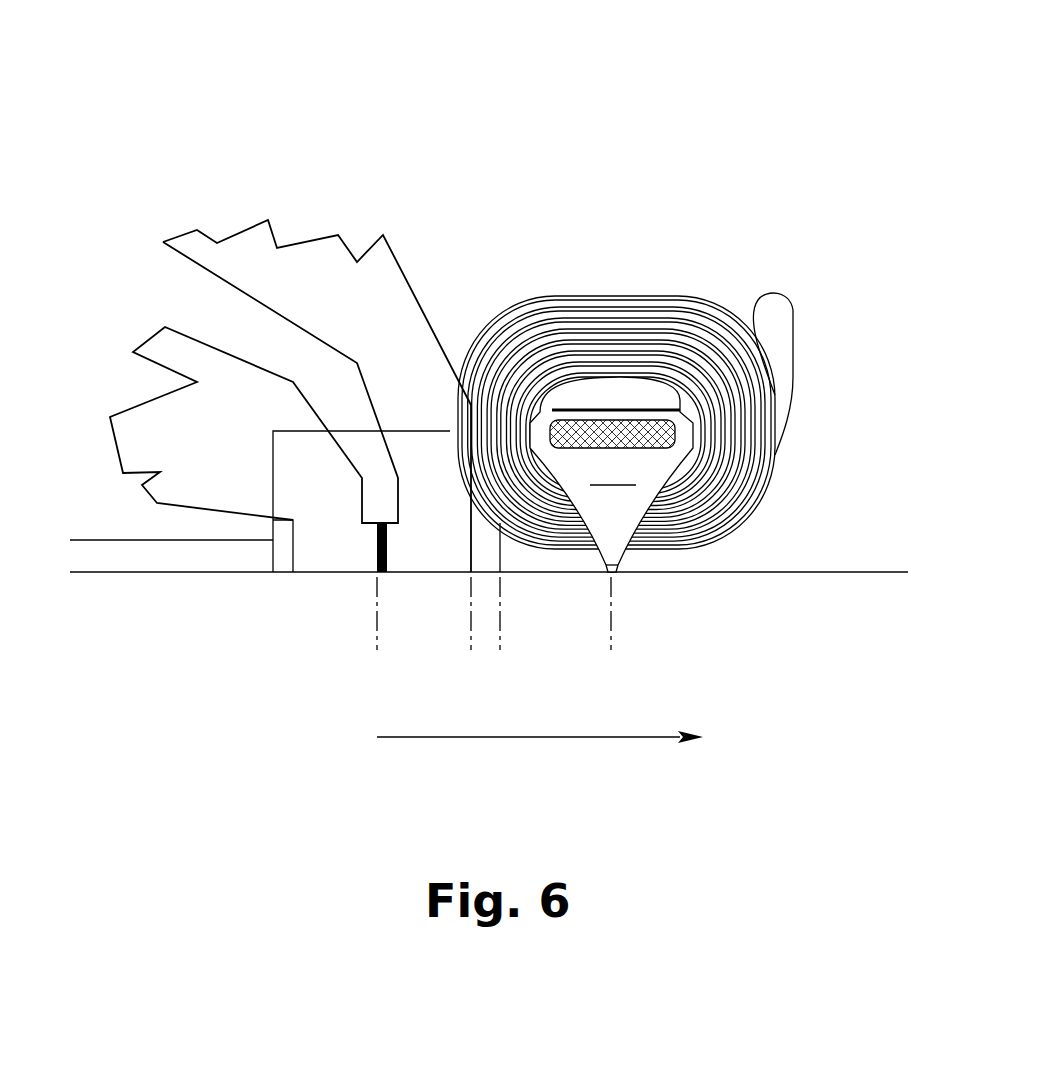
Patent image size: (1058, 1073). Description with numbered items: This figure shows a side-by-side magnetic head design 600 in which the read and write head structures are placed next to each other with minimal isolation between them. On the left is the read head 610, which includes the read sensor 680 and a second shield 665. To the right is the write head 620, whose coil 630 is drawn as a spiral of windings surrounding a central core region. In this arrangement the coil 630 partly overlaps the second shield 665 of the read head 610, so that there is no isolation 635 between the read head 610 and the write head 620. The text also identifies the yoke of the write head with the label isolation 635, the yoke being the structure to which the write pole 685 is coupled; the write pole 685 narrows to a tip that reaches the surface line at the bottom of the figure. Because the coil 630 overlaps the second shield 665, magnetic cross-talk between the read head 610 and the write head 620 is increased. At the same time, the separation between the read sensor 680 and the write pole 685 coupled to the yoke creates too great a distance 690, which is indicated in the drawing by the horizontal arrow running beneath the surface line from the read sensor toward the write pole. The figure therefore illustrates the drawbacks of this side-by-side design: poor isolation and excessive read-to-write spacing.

The side-by-side magnetic head design 600 is at (643, 105).
The read head 610 is at (207, 189).
The write head 620 is at (585, 459).
The coil 630 is at (652, 299).
The isolation 635 is at (487, 658).
The second shield 665 is at (408, 430).
The read sensor 680 is at (377, 572).
The write pole 685 is at (610, 575).
The distance 690 is at (470, 738).